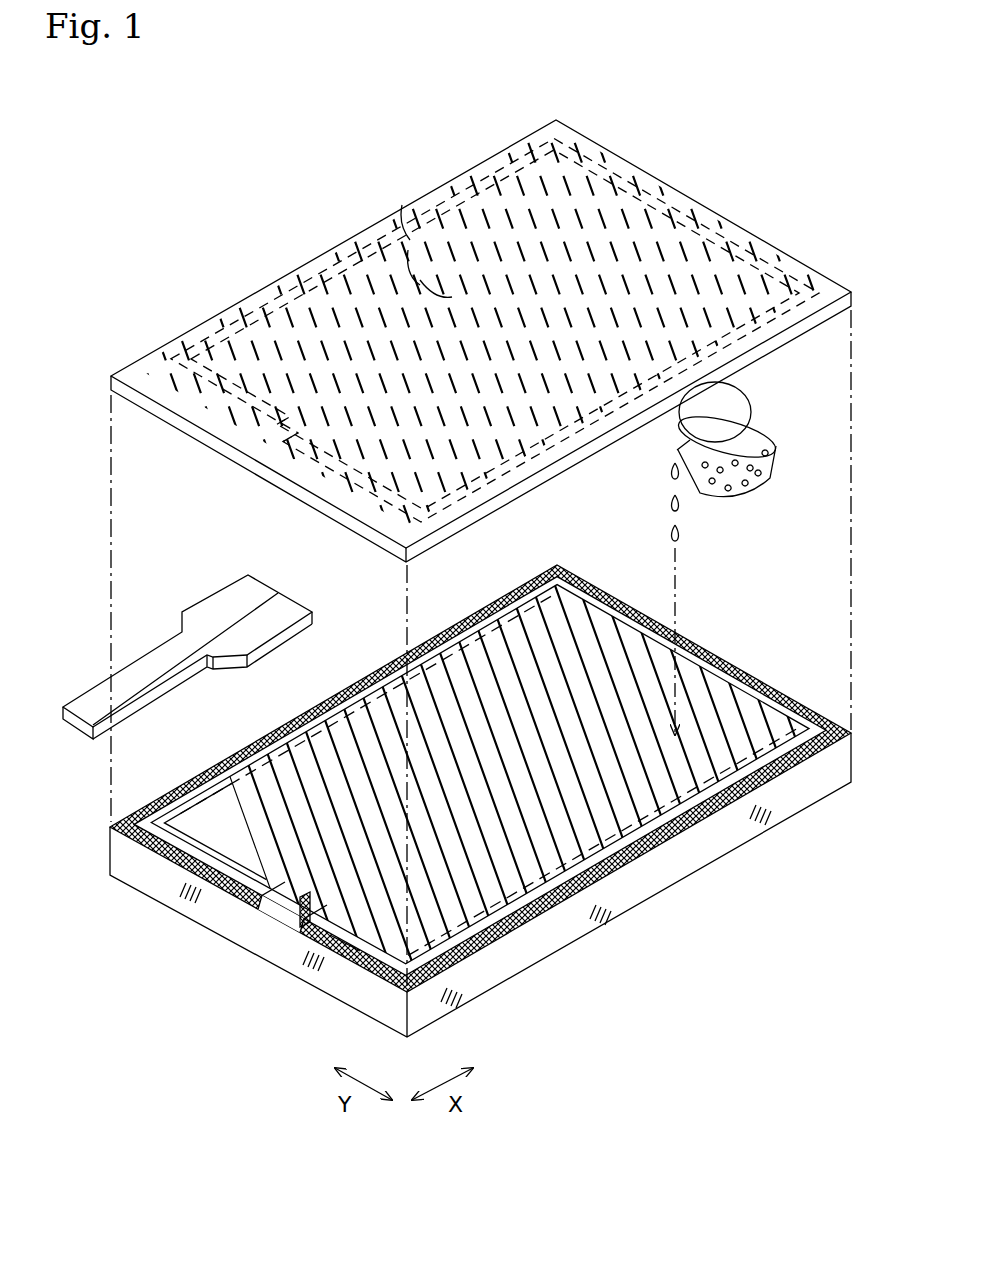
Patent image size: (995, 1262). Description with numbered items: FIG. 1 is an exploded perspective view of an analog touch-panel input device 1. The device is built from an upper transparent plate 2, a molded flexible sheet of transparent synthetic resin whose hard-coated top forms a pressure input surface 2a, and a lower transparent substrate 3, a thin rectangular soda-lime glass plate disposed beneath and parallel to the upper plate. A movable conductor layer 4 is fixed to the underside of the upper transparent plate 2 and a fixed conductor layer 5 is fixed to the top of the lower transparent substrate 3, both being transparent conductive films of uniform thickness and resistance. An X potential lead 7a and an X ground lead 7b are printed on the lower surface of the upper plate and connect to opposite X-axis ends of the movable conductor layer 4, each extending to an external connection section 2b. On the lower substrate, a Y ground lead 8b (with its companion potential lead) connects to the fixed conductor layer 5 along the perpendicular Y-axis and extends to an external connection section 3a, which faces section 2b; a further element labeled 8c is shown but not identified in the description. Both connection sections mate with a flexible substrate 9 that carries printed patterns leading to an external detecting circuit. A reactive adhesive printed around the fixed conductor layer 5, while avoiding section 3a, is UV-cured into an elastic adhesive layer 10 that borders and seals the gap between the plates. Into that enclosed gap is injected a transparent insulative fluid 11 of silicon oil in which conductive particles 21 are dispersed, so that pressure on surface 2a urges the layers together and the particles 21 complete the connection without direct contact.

The touch-panel input device 1 is at (253, 242).
The upper transparent plate 2 is at (524, 326).
The pressure input surface 2a is at (580, 238).
The external connection section 2b is at (290, 457).
The lower transparent substrate 3 is at (552, 807).
The external connection section 3a is at (278, 913).
The movable conductor layer 4 is at (397, 200).
The fixed conductor layer 5 is at (595, 773).
The X potential lead 7a is at (668, 197).
The X ground lead 7b is at (220, 395).
The Y ground lead 8b is at (340, 955).
The groove 8c is at (162, 830).
The flexible substrate 9 is at (222, 600).
The adhesive layer 10 is at (395, 655).
The transparent insulative fluid 11 is at (688, 518).
The conductive particles 21 is at (768, 473).